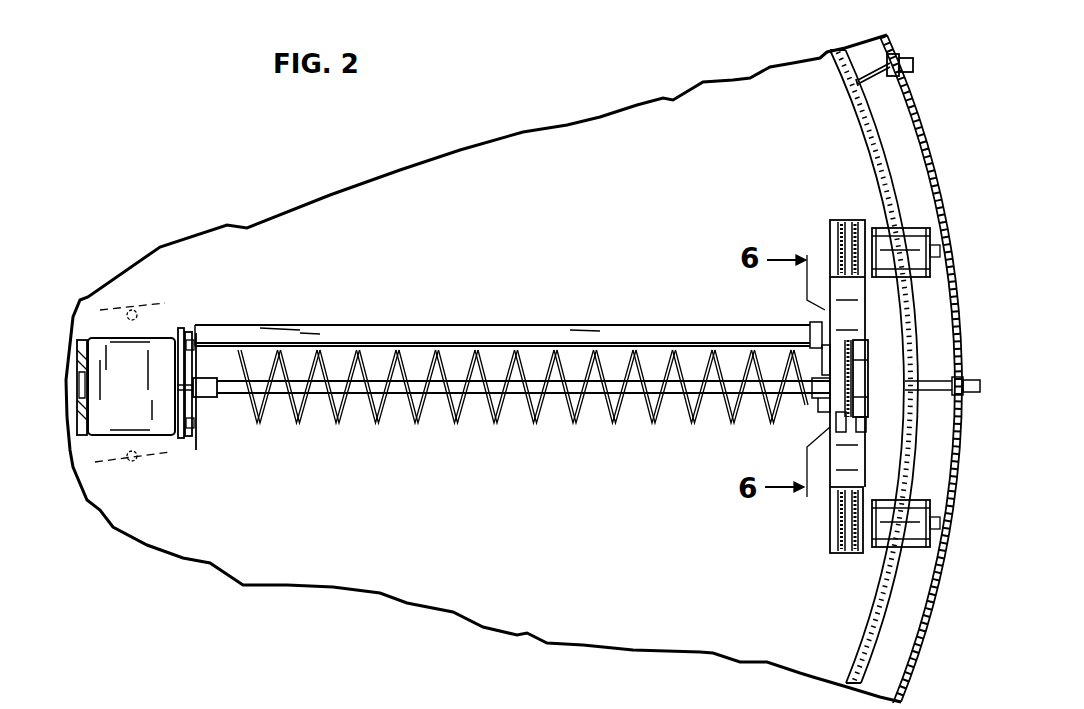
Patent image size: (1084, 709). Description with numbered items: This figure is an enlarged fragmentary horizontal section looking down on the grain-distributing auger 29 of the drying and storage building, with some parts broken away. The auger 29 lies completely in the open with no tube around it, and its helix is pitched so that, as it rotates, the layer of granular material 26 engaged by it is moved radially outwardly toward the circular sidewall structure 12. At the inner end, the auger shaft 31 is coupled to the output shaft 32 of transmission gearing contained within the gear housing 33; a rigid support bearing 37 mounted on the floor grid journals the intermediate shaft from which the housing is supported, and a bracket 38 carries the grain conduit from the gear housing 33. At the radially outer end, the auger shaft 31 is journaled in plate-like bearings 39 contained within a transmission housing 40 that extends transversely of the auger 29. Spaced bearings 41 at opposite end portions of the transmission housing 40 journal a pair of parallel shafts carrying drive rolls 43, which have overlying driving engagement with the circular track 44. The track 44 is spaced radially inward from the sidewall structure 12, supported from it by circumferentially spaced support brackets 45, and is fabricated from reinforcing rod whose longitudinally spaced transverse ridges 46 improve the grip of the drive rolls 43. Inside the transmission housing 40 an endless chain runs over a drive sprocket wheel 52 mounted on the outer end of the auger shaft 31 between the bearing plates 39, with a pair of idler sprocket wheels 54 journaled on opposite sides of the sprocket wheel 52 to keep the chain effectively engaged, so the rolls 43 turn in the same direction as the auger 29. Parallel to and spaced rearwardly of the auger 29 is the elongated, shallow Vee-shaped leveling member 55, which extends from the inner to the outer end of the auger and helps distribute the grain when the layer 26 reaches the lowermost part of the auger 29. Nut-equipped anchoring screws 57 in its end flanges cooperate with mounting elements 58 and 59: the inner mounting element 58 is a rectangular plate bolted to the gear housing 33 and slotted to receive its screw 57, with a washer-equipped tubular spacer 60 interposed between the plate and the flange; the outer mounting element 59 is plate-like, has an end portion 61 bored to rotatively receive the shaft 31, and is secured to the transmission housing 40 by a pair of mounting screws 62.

The circular sidewall structure 12 is at (923, 123).
The layer of granular material 26 is at (348, 186).
The auger 29 is at (547, 425).
The auger shaft 31 is at (478, 395).
The output shaft 32 is at (196, 442).
The gear housing 33 is at (148, 352).
The support bearing 37 is at (158, 470).
The bracket 38 is at (84, 440).
The plate-like bearings 39 is at (830, 423).
The transmission housing 40 is at (832, 560).
The bearings 41 is at (858, 228).
The drive rolls 43 is at (905, 236).
The circular track 44 is at (851, 115).
The support brackets 45 is at (912, 62).
The transverse ridges 46 is at (870, 150).
The drive sprocket wheel 52 is at (858, 381).
The idler sprocket wheels 54 is at (856, 352).
The leveling member 55 is at (510, 325).
The anchoring screws 57 is at (181, 328).
The mounting element 58 is at (188, 332).
The mounting element 59 is at (830, 400).
The tubular spacer 60 is at (198, 328).
The end portion 61 is at (832, 398).
The mounting screws 62 is at (827, 371).